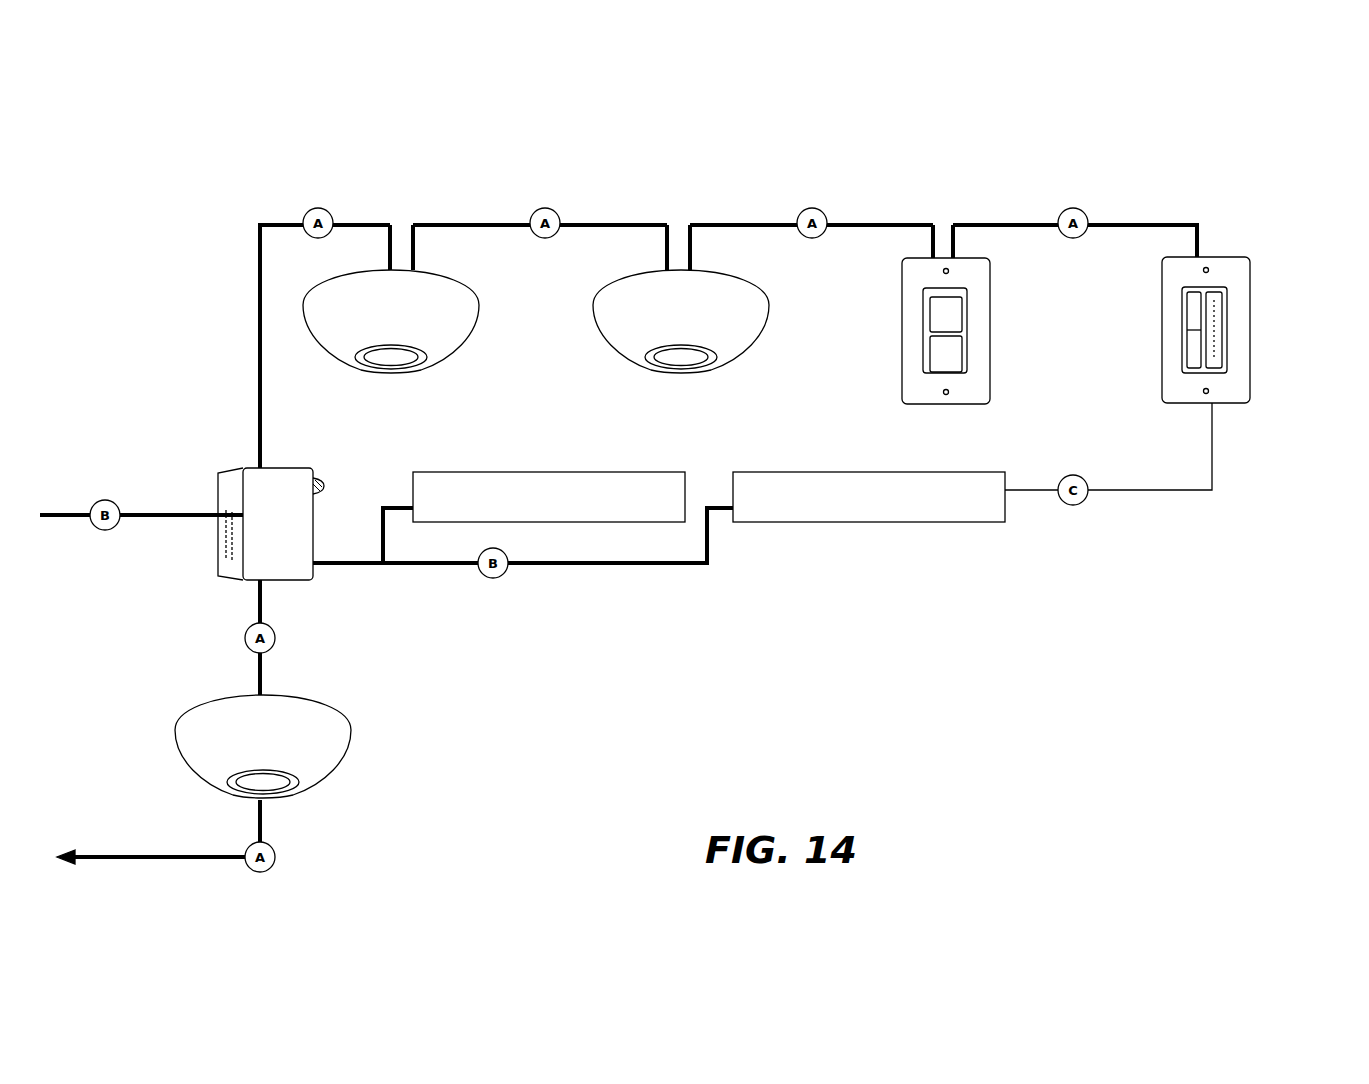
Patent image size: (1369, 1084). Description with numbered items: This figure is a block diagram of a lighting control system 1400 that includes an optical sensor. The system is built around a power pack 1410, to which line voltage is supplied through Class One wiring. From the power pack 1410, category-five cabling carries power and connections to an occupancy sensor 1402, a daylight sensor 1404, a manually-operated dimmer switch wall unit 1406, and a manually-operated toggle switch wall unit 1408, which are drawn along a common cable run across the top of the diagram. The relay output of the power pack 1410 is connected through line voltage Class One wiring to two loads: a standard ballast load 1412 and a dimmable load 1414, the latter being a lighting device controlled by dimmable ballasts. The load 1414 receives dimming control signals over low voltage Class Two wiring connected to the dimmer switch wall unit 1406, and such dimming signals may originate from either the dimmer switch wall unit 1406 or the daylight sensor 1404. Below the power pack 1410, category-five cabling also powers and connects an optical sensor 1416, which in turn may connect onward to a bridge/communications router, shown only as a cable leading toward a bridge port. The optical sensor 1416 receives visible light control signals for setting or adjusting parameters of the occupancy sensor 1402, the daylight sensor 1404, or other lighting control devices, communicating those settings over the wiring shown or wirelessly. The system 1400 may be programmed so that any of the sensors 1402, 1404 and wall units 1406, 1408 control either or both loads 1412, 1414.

The lighting control system 1400 is at (606, 122).
The occupancy sensor 1402 is at (755, 290).
The daylight sensor 1404 is at (462, 287).
The manually-operated dimmer switch wall unit 1406 is at (1252, 288).
The manually-operated toggle switch wall unit 1408 is at (992, 290).
The power pack 1410 is at (295, 468).
The load 1412 is at (542, 472).
The load 1414 is at (818, 472).
The optical sensor 1416 is at (290, 695).